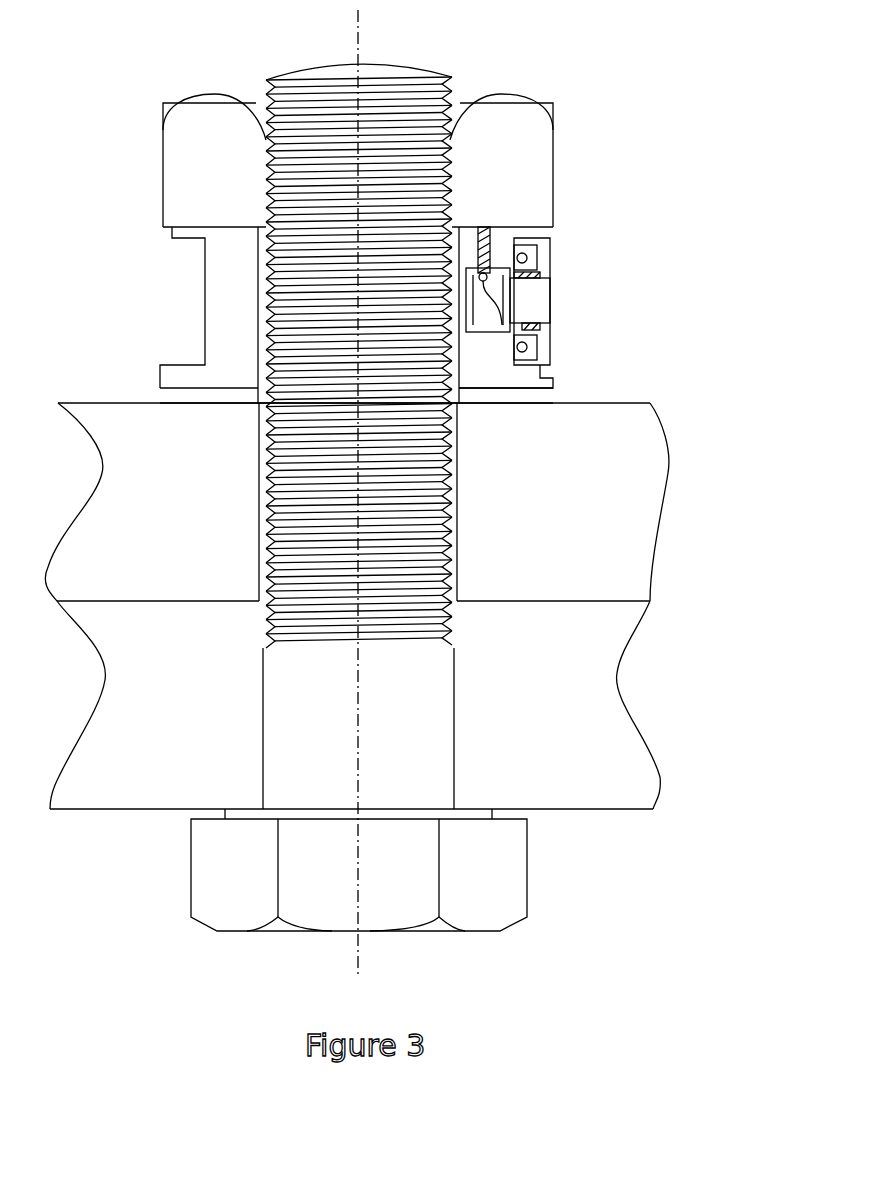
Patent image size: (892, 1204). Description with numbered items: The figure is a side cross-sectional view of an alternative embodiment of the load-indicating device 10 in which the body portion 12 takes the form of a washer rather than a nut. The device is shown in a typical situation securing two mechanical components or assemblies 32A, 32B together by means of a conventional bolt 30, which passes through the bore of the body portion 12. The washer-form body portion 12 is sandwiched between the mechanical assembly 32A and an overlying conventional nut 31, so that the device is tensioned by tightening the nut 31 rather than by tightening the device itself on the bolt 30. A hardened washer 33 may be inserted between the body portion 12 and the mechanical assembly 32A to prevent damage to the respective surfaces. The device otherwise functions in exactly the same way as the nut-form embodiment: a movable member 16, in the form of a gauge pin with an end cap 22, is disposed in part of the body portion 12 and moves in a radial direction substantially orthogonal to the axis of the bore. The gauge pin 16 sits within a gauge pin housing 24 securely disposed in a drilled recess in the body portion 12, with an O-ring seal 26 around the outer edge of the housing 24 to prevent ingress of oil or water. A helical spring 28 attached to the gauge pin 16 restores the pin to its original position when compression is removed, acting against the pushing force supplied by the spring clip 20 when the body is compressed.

The load-indicating device 10 is at (362, 246).
The body portion 12 is at (223, 338).
The movable member 16 is at (584, 292).
The spring clip 20 is at (483, 285).
The end cap 22 is at (550, 313).
The gauge pin housing 24 is at (502, 302).
The O-ring seal 26 is at (528, 258).
The helical spring 28 is at (540, 325).
The bolt 30 is at (440, 793).
The nut 31 is at (543, 128).
The mechanical assembly 32A is at (647, 513).
The mechanical assembly 32B is at (613, 723).
The hardened washer 33 is at (553, 397).